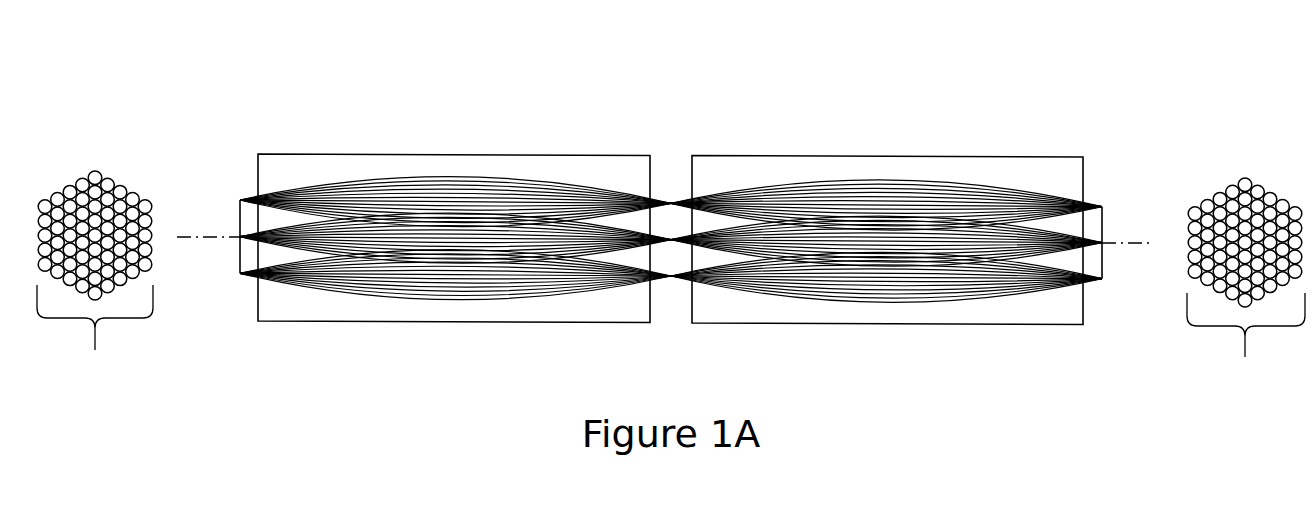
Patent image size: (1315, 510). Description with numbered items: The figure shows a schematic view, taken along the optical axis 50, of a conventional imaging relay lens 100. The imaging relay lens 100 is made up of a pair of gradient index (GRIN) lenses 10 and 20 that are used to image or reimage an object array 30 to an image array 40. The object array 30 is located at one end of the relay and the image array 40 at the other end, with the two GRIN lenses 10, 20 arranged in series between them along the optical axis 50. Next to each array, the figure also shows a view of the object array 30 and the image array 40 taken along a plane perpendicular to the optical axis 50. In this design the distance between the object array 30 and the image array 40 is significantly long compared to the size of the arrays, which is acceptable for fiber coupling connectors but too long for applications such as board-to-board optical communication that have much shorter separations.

The imaging relay lens 100 is at (212, 107).
The gradient index (GRIN) lens 10 is at (372, 321).
The gradient index (GRIN) lens 20 is at (971, 325).
The object array 30 is at (240, 218).
The image array 40 is at (1102, 222).
The optical axis 50 is at (207, 239).